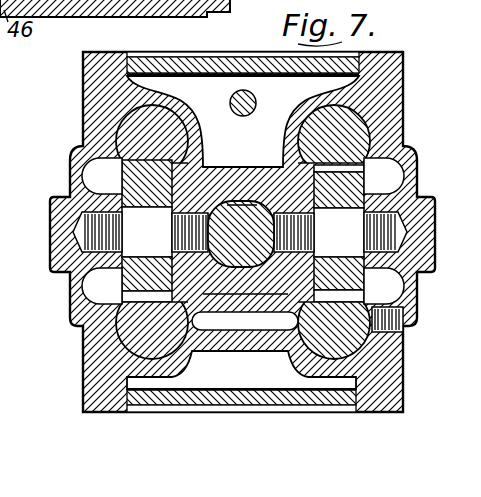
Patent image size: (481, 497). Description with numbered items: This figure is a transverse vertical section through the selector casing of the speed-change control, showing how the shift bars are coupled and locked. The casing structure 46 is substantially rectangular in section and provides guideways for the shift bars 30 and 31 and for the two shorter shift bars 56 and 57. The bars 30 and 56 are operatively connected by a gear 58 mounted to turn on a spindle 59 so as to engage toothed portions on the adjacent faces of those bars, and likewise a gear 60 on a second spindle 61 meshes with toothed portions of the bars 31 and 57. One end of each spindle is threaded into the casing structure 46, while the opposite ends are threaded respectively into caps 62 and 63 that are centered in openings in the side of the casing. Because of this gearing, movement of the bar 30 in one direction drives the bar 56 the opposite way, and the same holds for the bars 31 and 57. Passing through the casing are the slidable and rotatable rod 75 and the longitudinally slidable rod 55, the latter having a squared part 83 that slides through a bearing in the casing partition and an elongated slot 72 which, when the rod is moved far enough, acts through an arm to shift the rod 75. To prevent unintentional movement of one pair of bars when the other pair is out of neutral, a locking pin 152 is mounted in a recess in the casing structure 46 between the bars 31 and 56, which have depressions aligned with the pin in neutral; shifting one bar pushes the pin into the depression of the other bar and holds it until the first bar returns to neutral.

The shift bar 30 is at (137, 131).
The shift bar 57 is at (352, 125).
The rod 75 is at (247, 101).
The slot 72 is at (250, 204).
The squared part 83 is at (241, 204).
The gear 60 is at (353, 187).
The cap 62 is at (55, 224).
The cap 63 is at (427, 224).
The spindle 59 is at (147, 232).
The second spindle 61 is at (339, 232).
The gear 58 is at (127, 275).
The shift bar 56 is at (143, 333).
The slidable rod 55 is at (249, 257).
The locking pin 152 is at (265, 322).
The shift bar 31 is at (342, 340).
The casing structure 46 is at (387, 370).